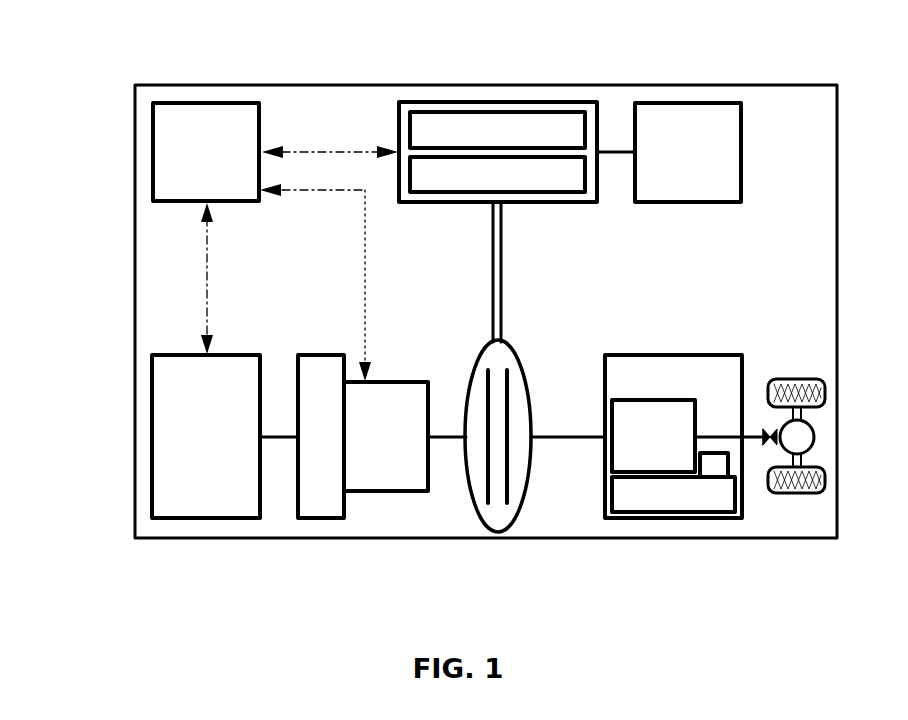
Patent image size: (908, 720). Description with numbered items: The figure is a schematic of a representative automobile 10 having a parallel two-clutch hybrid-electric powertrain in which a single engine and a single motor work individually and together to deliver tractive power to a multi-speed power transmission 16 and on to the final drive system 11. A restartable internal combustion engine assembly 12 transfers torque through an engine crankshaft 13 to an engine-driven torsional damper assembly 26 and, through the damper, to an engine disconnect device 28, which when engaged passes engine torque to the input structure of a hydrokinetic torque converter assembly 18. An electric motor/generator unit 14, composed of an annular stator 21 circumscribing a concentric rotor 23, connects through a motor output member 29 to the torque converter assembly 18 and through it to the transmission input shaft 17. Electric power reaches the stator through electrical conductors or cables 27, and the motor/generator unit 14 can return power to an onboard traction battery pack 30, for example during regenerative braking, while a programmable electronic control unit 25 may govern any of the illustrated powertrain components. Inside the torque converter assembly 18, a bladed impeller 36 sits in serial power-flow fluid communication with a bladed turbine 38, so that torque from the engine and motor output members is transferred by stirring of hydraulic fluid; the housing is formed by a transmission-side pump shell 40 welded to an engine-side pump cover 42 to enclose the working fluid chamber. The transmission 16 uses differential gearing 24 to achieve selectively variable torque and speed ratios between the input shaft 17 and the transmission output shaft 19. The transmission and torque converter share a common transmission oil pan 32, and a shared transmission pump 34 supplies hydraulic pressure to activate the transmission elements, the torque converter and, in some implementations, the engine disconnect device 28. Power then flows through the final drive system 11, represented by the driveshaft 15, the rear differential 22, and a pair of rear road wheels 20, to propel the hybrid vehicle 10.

The automobile 10 is at (112, 62).
The final drive system 11 is at (838, 234).
The internal combustion engine assembly 12 is at (165, 355).
The engine crankshaft 13 is at (278, 437).
The electric motor/generator unit 14 is at (466, 117).
The driveshaft 15 is at (755, 437).
The multi-speed power transmission 16 is at (672, 440).
The transmission input shaft 17 is at (563, 437).
The hydrokinetic torque converter assembly 18 is at (509, 473).
The transmission output shaft 19 is at (707, 437).
The rear road wheels 20 is at (795, 379).
The annular stator 21 is at (402, 120).
The rear differential 22 is at (813, 432).
The rotor 23 is at (402, 168).
The differential gearing 24 is at (653, 400).
The programmable electronic control unit 25 is at (163, 103).
The torsional damper assembly 26 is at (335, 355).
The electrical conductors or cables 27 is at (608, 152).
The engine disconnect device 28 is at (401, 382).
The motor output member 29 is at (493, 232).
The traction battery pack 30 is at (660, 103).
The transmission oil pan 32 is at (650, 490).
The transmission pump 34 is at (710, 462).
The bladed impeller 36 is at (482, 498).
The bladed turbine 38 is at (512, 498).
The transmission-side pump shell 40 is at (530, 463).
The engine-side pump cover 42 is at (470, 487).